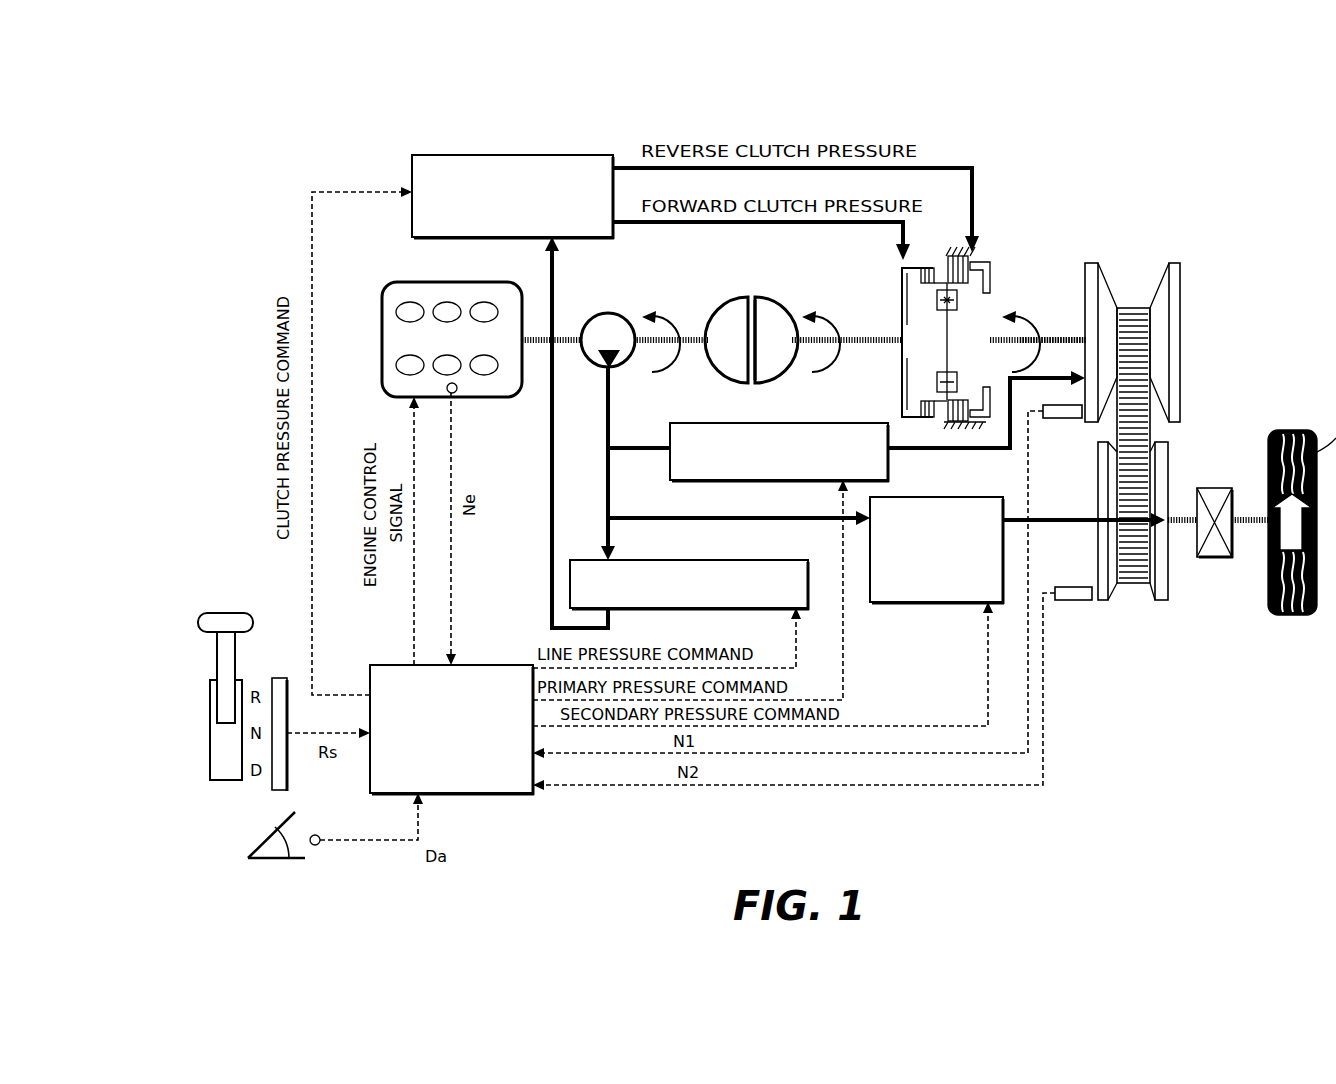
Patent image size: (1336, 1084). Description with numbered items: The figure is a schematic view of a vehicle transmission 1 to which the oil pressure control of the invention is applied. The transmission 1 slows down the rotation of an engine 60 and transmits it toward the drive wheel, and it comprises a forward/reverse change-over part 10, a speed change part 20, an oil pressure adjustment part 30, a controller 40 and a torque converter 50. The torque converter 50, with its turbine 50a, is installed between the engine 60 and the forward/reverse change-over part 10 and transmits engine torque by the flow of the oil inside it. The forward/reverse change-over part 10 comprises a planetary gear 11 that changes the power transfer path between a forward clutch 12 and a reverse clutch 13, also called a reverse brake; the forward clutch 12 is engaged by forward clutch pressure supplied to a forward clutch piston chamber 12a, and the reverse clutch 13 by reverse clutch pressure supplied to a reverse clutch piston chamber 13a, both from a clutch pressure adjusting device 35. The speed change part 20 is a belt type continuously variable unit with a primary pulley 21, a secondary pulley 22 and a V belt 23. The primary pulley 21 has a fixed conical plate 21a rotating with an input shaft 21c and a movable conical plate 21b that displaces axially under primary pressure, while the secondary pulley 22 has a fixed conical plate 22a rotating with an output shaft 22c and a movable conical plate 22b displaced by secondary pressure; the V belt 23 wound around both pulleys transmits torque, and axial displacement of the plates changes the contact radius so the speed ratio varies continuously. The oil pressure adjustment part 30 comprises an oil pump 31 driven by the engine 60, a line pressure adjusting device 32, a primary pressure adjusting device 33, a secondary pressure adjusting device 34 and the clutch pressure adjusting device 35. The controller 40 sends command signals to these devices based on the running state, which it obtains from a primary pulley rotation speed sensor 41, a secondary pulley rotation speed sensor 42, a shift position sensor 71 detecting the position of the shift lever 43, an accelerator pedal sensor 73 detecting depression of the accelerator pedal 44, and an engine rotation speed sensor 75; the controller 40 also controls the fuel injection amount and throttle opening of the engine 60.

The transmission 1 is at (1203, 138).
The forward/reverse change-over part 10 is at (938, 312).
The planetary gear 11 is at (944, 270).
The forward clutch 12 is at (920, 263).
The forward clutch piston chamber 12a is at (917, 267).
The reverse clutch 13 is at (1000, 318).
The reverse clutch piston chamber 13a is at (985, 283).
The speed change part 20 is at (1144, 401).
The primary pulley 21 is at (1165, 309).
The fixed conical plate 21a is at (1176, 260).
The movable conical plate 21b is at (1091, 260).
The input shaft 21c is at (1056, 338).
The secondary pulley 22 is at (1123, 558).
The fixed conical plate 22a is at (1106, 608).
The movable conical plate 22b is at (1165, 608).
The output shaft 22c is at (1187, 527).
The V belt 23 is at (1133, 428).
The oil pressure adjustment part 30 is at (535, 543).
The oil pump 31 is at (604, 316).
The line pressure adjusting device 32 is at (800, 563).
The primary pressure adjusting device 33 is at (800, 423).
The secondary pressure adjusting device 34 is at (874, 603).
The clutch pressure adjusting device 35 is at (557, 157).
The controller 40 is at (393, 665).
The primary pulley rotation speed sensor 41 is at (1062, 420).
The secondary pulley rotation speed sensor 42 is at (1065, 603).
The shift lever 43 is at (210, 754).
The accelerator pedal 44 is at (262, 840).
The torque converter 50 is at (777, 294).
The turbine 50a is at (776, 362).
The engine 60 is at (426, 273).
The shift position sensor 71 is at (272, 780).
The accelerator pedal sensor 73 is at (316, 846).
The engine rotation speed sensor 75 is at (456, 393).